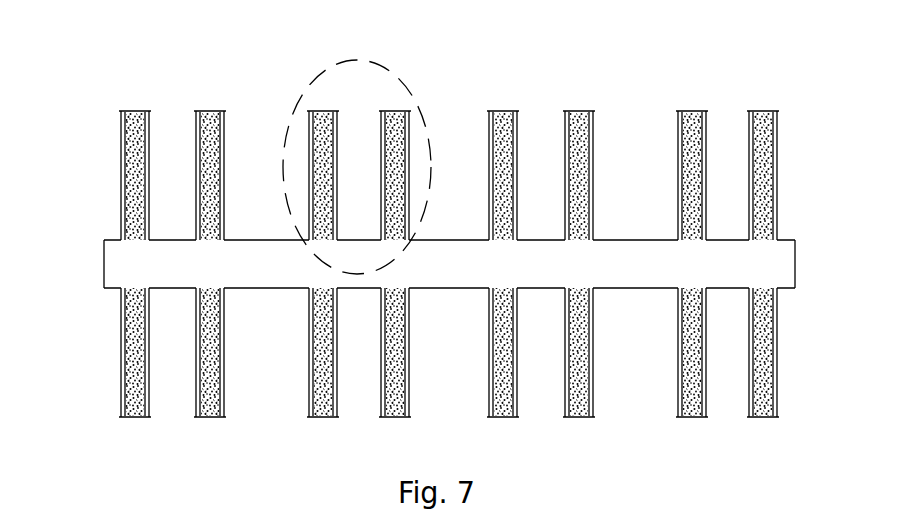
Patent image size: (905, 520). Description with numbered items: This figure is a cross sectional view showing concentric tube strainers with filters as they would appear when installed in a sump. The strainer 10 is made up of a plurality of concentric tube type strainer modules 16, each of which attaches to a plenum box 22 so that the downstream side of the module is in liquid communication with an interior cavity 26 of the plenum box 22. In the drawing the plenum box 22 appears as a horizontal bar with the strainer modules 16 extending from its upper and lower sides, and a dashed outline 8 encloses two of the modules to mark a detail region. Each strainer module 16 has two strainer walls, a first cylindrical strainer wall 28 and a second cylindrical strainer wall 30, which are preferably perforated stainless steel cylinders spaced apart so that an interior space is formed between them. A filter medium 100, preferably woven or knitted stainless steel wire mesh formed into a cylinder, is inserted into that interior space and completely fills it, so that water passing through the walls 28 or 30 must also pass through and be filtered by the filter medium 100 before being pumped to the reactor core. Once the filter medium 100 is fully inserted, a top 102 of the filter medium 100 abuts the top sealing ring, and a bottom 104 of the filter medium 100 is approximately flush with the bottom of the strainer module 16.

The detail region circle 8 is at (312, 75).
The strainer 10 is at (777, 157).
The concentric tube type strainer module 16 is at (140, 111).
The plenum box 22 is at (790, 242).
The interior cavity 26 is at (623, 288).
The first cylindrical strainer wall 28 is at (677, 138).
The second cylindrical strainer wall 30 is at (705, 148).
The filter medium 100 is at (214, 186).
The top of the filter medium 102 is at (128, 113).
The bottom of the filter medium 104 is at (133, 242).